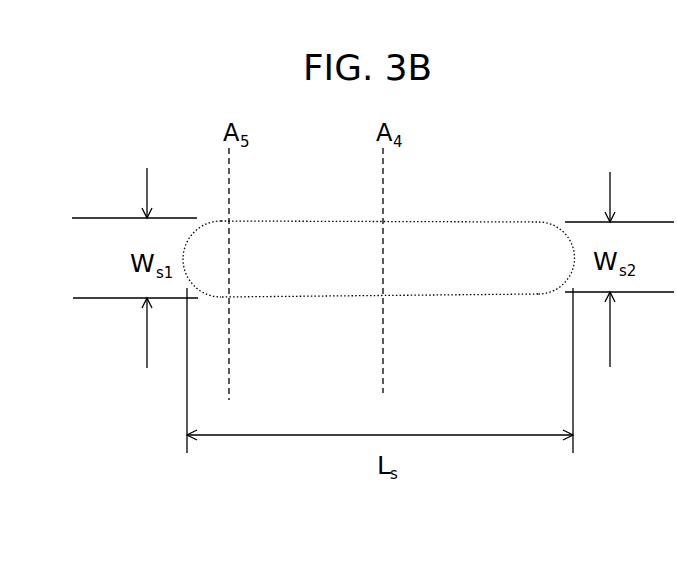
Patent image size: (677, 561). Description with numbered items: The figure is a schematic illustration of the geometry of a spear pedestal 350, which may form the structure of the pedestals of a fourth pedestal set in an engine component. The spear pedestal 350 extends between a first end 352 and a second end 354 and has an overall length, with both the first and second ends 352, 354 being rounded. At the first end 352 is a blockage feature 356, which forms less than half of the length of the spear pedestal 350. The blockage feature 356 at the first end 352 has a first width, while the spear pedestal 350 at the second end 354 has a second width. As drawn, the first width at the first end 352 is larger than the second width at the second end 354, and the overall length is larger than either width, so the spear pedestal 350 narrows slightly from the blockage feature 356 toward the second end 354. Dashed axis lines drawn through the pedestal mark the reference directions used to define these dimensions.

The spear pedestal 350 is at (353, 218).
The first end 352 is at (193, 193).
The second end 354 is at (543, 185).
The blockage feature 356 is at (250, 219).